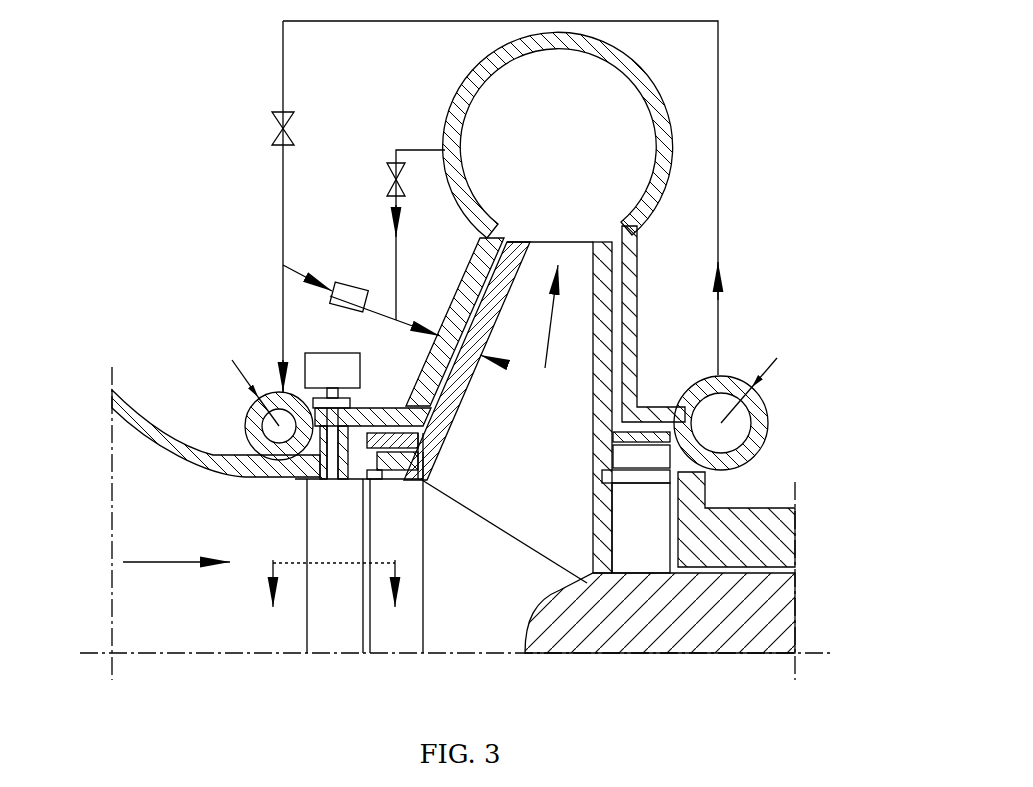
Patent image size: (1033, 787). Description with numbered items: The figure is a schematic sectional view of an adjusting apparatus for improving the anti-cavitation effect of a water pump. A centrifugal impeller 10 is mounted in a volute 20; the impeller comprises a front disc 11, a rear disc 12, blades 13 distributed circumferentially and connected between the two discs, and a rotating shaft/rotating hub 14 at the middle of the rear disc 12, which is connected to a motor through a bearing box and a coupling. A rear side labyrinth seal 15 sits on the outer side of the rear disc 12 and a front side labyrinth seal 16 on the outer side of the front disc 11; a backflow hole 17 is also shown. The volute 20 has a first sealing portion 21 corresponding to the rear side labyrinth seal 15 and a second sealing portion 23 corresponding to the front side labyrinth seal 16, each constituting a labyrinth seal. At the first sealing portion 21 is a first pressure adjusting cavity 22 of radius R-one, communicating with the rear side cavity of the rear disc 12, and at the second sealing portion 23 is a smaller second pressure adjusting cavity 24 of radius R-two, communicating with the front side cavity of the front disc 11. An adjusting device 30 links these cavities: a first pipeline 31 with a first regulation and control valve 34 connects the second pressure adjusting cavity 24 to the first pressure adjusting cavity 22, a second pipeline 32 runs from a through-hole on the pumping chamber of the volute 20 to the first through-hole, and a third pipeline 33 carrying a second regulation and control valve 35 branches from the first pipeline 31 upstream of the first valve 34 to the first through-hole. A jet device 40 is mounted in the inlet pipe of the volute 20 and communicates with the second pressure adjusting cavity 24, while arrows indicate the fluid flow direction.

The centrifugal impeller 10 is at (617, 542).
The front disc 11 is at (507, 270).
The rear disc 12 is at (603, 337).
The blade 13 is at (572, 297).
The rotating shaft/rotating hub 14 is at (727, 623).
The rear side labyrinth seal 15 is at (628, 447).
The front side labyrinth seal 16 is at (397, 477).
The backflow hole 17 is at (472, 350).
The volute 20 is at (672, 148).
The first sealing portion 21 is at (652, 460).
The first pressure adjusting cavity/pressure storage cavity 22 is at (757, 413).
The second sealing portion 23 is at (378, 456).
The second pressure adjusting cavity 24 is at (262, 412).
The adjusting device 30 is at (720, 75).
The first pipeline 31 is at (283, 85).
The second pipeline 32 is at (396, 253).
The third pipeline 33 is at (408, 322).
The first regulation and control valve 34 is at (283, 127).
The second regulation and control valve 35 is at (330, 296).
The jet device 40 is at (307, 527).